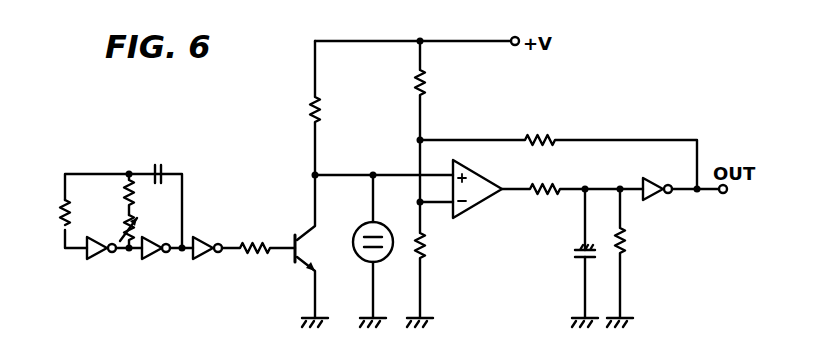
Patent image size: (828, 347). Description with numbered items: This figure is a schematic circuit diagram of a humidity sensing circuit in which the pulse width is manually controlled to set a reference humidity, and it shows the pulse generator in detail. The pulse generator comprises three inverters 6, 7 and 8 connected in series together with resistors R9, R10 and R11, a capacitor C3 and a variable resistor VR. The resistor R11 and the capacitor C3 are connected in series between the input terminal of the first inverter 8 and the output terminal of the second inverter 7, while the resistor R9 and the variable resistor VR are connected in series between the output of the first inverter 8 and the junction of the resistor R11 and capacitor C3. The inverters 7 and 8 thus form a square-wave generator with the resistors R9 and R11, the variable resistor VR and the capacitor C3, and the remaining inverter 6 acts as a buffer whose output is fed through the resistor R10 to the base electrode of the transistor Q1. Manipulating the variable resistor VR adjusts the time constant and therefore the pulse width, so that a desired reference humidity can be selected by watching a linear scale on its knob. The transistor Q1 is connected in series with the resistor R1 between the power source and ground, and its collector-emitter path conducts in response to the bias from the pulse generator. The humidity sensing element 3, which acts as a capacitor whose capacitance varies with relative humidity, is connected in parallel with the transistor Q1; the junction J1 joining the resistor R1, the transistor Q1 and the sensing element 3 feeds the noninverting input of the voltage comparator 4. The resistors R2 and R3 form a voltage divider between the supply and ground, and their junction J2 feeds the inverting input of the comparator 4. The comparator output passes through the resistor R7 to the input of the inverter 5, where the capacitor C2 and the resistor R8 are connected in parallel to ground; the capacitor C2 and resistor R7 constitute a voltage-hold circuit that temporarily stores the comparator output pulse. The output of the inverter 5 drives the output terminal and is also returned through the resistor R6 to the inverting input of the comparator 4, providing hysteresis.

The humidity sensing element 3 is at (386, 258).
The voltage comparator 4 is at (480, 178).
The inverter 5 is at (650, 180).
The inverter 6 is at (209, 261).
The inverter 7 is at (156, 261).
The inverter 8 is at (98, 261).
The resistor R1 is at (322, 122).
The resistor R2 is at (425, 96).
The resistor R3 is at (425, 252).
The resistor R6 is at (540, 132).
The resistor R7 is at (545, 184).
The resistor R8 is at (628, 255).
The resistor R9 is at (125, 191).
The resistor R10 is at (252, 243).
The resistor R11 is at (71, 217).
The variable resistor VR is at (139, 229).
The capacitor C2 is at (575, 254).
The capacitor C3 is at (160, 164).
The transistor Q1 is at (306, 249).
The junction J1 is at (312, 173).
The junction J2 is at (417, 203).